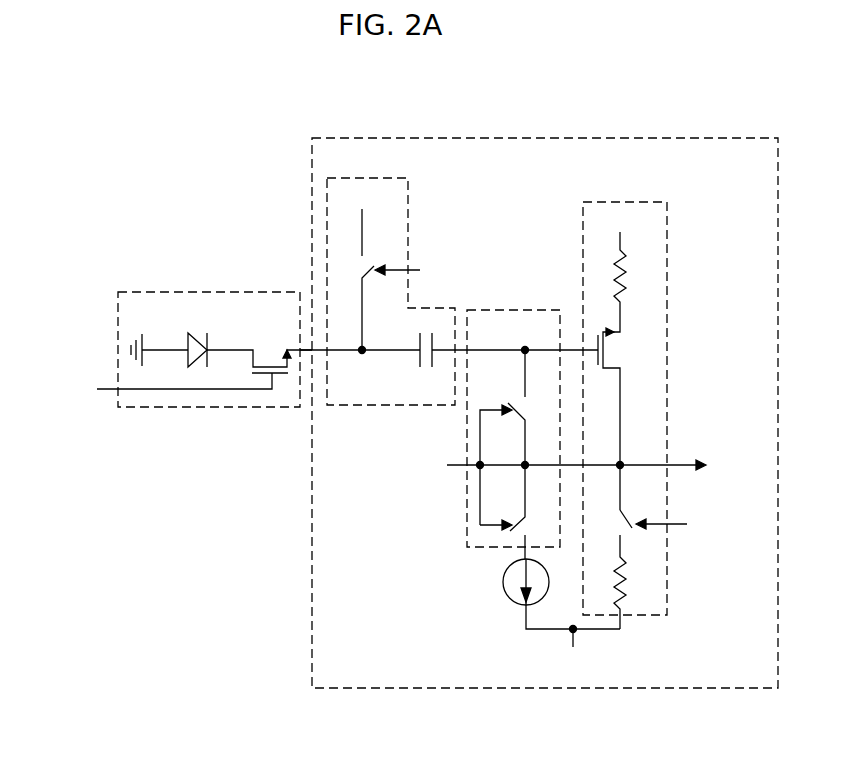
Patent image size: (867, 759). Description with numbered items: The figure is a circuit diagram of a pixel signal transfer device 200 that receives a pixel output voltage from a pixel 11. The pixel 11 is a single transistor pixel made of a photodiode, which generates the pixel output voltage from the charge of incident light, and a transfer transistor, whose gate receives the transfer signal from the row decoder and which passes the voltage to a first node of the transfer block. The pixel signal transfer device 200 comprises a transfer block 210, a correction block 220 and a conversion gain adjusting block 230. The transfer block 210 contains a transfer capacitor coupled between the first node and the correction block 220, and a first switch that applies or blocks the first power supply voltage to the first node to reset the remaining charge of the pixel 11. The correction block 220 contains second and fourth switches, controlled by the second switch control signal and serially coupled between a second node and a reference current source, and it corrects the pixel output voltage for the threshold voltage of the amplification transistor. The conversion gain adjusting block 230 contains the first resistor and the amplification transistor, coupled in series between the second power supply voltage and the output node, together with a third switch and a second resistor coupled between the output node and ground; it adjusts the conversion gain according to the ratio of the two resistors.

The pixel 11 is at (240, 292).
The pixel signal transfer device 200 is at (732, 138).
The transfer block 210 is at (366, 178).
The correction block 220 is at (516, 310).
The conversion gain adjusting block 230 is at (628, 202).